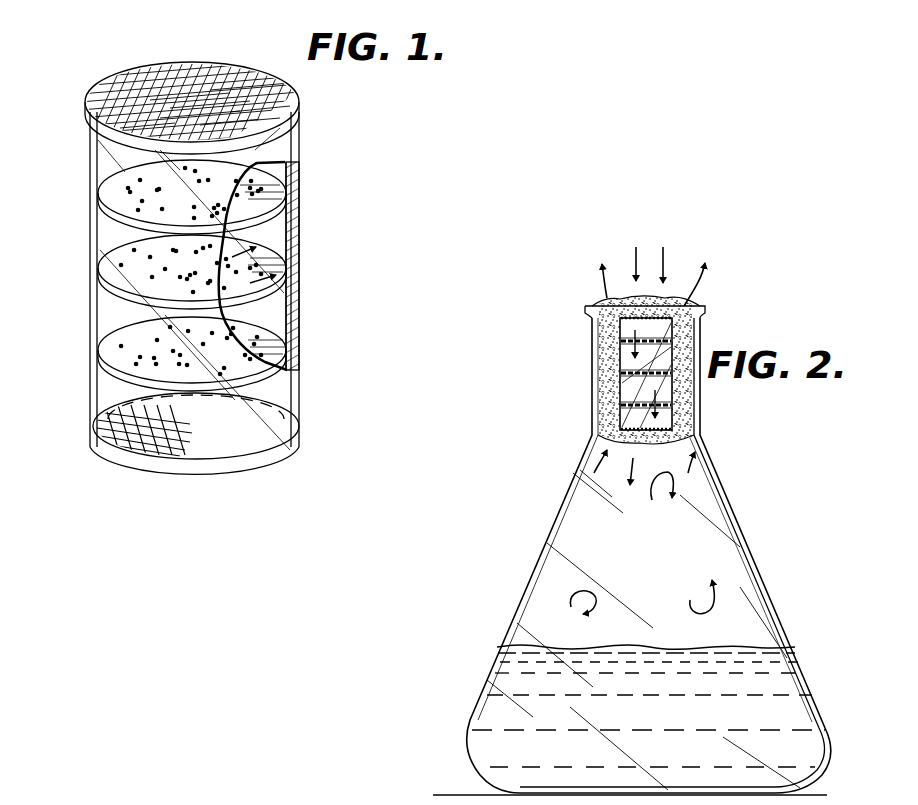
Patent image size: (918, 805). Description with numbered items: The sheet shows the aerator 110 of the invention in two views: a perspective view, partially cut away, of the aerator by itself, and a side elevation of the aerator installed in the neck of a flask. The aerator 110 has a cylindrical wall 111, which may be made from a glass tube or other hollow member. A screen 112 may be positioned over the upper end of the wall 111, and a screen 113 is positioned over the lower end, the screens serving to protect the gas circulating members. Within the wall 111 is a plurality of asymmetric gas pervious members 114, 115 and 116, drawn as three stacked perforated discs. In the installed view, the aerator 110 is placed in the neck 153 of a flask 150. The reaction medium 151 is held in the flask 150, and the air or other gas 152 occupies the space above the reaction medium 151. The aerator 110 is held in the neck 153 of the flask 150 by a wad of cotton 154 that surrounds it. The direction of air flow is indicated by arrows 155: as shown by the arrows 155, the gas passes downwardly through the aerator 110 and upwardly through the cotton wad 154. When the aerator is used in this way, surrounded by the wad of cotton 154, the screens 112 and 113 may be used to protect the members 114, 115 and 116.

In FIG. 1, the aerator 110 is at (197, 265).
In FIG. 2, the aerator 110 is at (678, 343).
In FIG. 1, the cylindrical wall 111 is at (292, 313).
In FIG. 1, the screen 112 is at (135, 72).
In FIG. 1, the screen 113 is at (107, 452).
In FIG. 1, the asymmetric gas pervious member 114 is at (100, 203).
In FIG. 1, the asymmetric gas pervious member 115 is at (105, 287).
In FIG. 1, the asymmetric gas pervious member 116 is at (97, 375).
In FIG. 2, the flask 150 is at (629, 503).
In FIG. 2, the reaction medium 151 is at (670, 741).
In FIG. 2, the air or other gas 152 is at (662, 600).
In FIG. 2, the neck 153 is at (597, 395).
In FIG. 2, the wad of cotton 154 is at (602, 322).
In FIG. 2, the arrows 155 is at (637, 262).